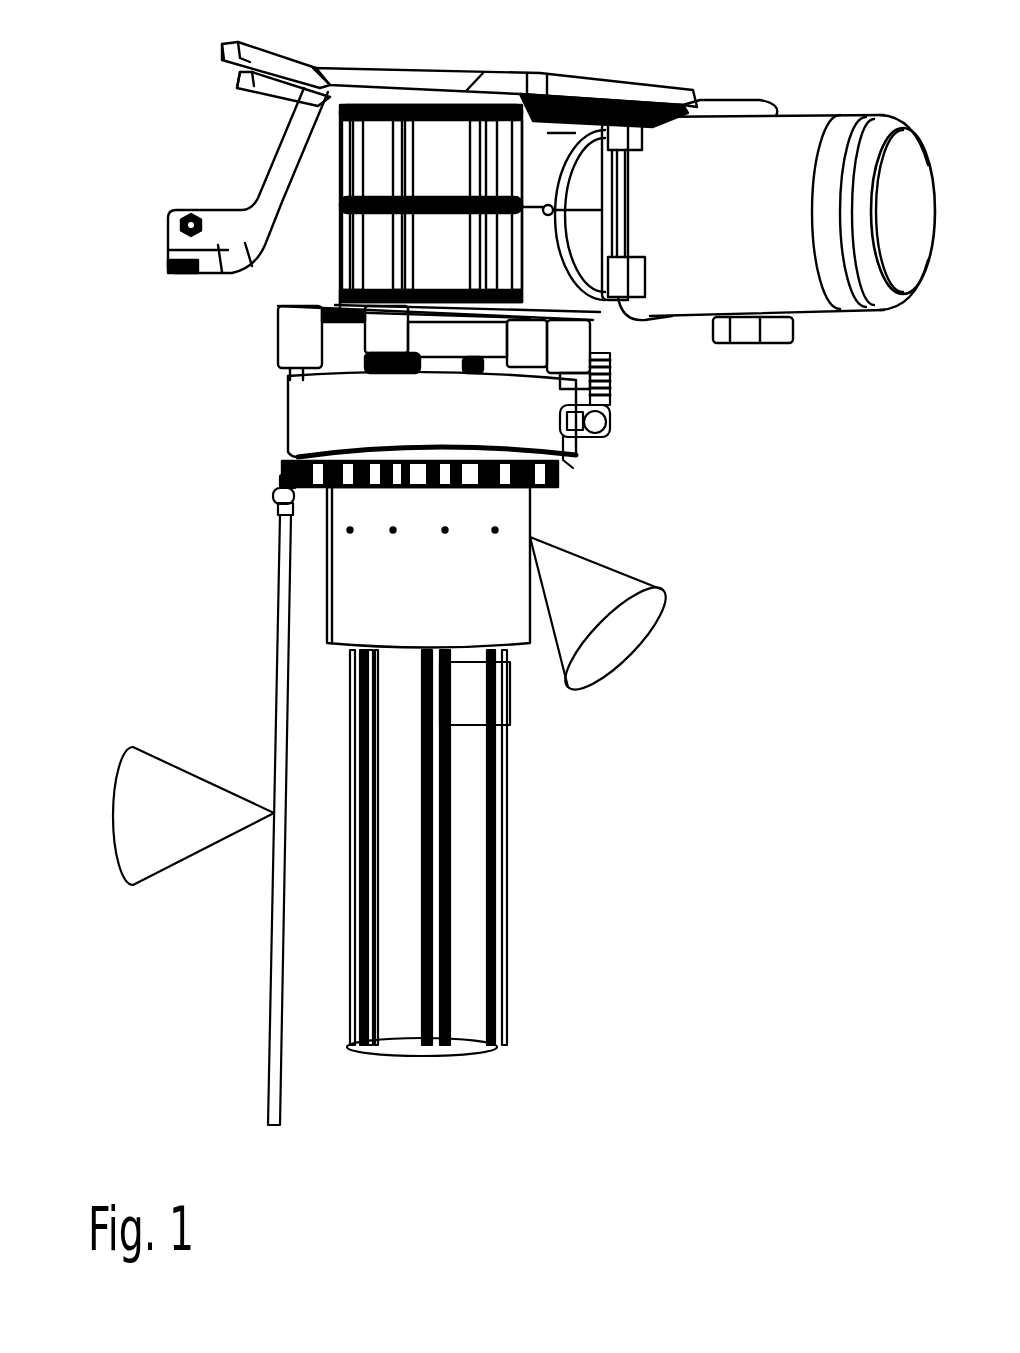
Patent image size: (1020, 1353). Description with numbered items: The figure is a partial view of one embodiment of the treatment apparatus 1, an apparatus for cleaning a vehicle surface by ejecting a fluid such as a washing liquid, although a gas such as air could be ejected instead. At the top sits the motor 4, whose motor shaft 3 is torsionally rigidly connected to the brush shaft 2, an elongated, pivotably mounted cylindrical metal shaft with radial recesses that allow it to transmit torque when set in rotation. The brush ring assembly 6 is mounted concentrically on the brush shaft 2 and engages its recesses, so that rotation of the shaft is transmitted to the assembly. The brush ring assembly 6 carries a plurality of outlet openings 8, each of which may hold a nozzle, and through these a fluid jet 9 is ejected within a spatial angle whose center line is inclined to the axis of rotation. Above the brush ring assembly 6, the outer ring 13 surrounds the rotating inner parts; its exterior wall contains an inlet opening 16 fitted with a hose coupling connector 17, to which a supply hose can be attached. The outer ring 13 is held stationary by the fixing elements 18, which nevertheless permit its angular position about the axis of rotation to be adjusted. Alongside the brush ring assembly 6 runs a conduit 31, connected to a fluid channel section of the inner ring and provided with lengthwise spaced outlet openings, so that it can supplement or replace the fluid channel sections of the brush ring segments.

The treatment apparatus 1 is at (133, 507).
The brush shaft 2 is at (470, 809).
The motor shaft 3 is at (458, 333).
The motor 4 is at (372, 240).
The brush ring assembly 6 is at (327, 582).
The outlet openings 8 is at (530, 538).
The fluid jet 9 is at (637, 635).
The outer ring 13 is at (285, 434).
The inlet opening 16 is at (580, 440).
The hose coupling connector 17 is at (612, 402).
The fixing elements 18 is at (275, 345).
The conduit 31 is at (275, 697).